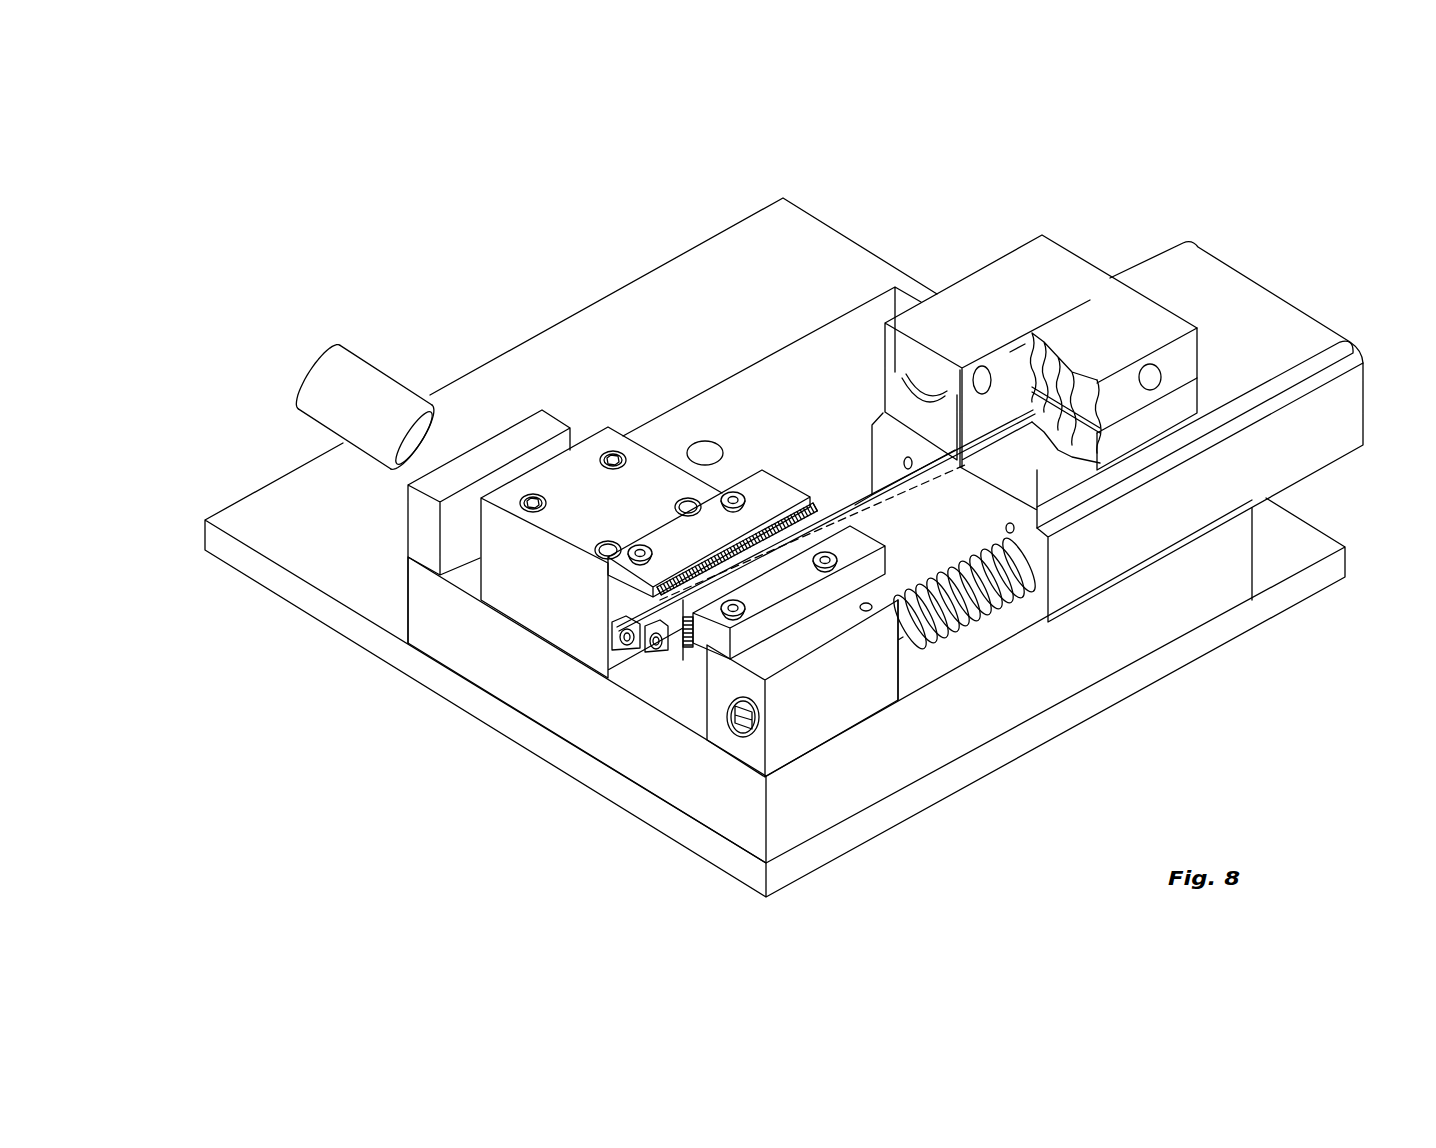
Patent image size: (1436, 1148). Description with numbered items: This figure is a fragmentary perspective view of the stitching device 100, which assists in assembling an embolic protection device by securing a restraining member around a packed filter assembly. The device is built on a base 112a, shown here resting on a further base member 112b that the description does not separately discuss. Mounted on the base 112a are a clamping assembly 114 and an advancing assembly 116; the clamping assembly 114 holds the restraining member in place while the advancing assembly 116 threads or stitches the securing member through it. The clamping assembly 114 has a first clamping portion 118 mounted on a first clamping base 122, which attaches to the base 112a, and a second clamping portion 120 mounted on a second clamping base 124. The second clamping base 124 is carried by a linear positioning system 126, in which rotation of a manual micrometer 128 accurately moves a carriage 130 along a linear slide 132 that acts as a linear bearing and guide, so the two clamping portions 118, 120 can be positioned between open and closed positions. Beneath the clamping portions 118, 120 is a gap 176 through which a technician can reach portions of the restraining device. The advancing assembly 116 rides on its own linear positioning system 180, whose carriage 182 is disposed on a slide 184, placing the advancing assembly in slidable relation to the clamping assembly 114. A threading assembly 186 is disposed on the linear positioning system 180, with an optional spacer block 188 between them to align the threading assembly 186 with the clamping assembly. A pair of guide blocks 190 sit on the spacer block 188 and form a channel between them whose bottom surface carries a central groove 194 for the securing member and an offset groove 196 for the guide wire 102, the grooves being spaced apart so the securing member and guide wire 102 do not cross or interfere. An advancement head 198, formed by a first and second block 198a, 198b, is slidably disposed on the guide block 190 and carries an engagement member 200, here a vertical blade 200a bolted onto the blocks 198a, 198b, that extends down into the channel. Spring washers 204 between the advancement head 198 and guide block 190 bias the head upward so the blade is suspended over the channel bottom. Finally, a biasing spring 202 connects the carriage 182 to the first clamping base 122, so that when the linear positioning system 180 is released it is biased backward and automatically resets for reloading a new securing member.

The stitching device 100 is at (887, 198).
The guide wire 102 is at (942, 592).
The base 112a is at (423, 603).
The lower base plate 112b is at (308, 558).
The clamping assembly 114 is at (755, 488).
The advancing assembly 116 is at (1024, 300).
The first clamping portion 118 is at (772, 598).
The second clamping portion 120 is at (699, 548).
The first clamping base 122 is at (733, 740).
The second clamping base 124 is at (573, 577).
The linear positioning system 126 is at (599, 754).
The manual micrometer 128 is at (367, 380).
The carriage 130 is at (627, 637).
The linear slide 132 is at (693, 643).
The gap 176 is at (706, 725).
The linear positioning system 180 is at (865, 434).
The carriage 182 is at (877, 447).
The slide 184 is at (867, 525).
The threading assembly 186 is at (1185, 303).
The spacer block 188 is at (1303, 333).
The guide block 190 is at (1207, 393).
The central groove 194 is at (1017, 593).
The offset groove 196 is at (1010, 595).
The advancement head 198 is at (1017, 300).
The first block 198a is at (1017, 325).
The second block 198b is at (1118, 315).
The engagement member 200 is at (978, 360).
The vertical blade 200a is at (1015, 360).
The biasing spring 202 is at (965, 620).
The spring washer 204 is at (912, 383).